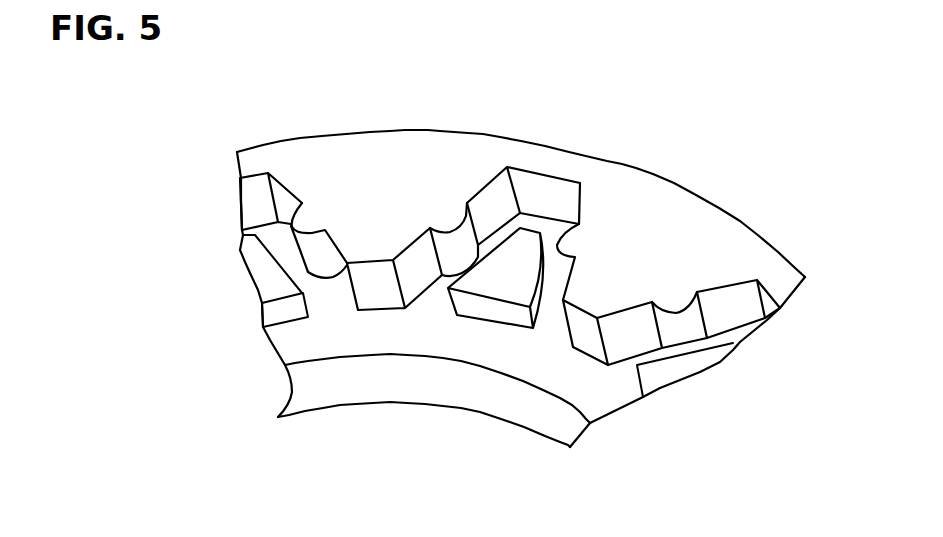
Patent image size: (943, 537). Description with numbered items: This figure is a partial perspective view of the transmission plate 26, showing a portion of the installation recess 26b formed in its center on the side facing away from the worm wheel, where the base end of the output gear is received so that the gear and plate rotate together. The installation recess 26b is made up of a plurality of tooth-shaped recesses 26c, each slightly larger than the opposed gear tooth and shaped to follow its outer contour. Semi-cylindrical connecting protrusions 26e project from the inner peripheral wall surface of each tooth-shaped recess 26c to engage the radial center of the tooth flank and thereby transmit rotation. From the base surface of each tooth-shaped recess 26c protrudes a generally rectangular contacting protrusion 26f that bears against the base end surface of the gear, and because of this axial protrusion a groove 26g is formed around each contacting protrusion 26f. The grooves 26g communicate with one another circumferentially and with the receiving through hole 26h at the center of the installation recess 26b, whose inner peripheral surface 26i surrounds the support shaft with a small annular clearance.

The transmission plate 26 is at (390, 148).
The installation recess 26b is at (378, 278).
The tooth-shaped recess 26c is at (257, 195).
The connecting protrusion 26e is at (460, 233).
The contacting protrusion 26f is at (503, 285).
The groove 26g is at (425, 328).
The receiving through hole 26h is at (300, 387).
The inner peripheral surface 26i is at (470, 398).